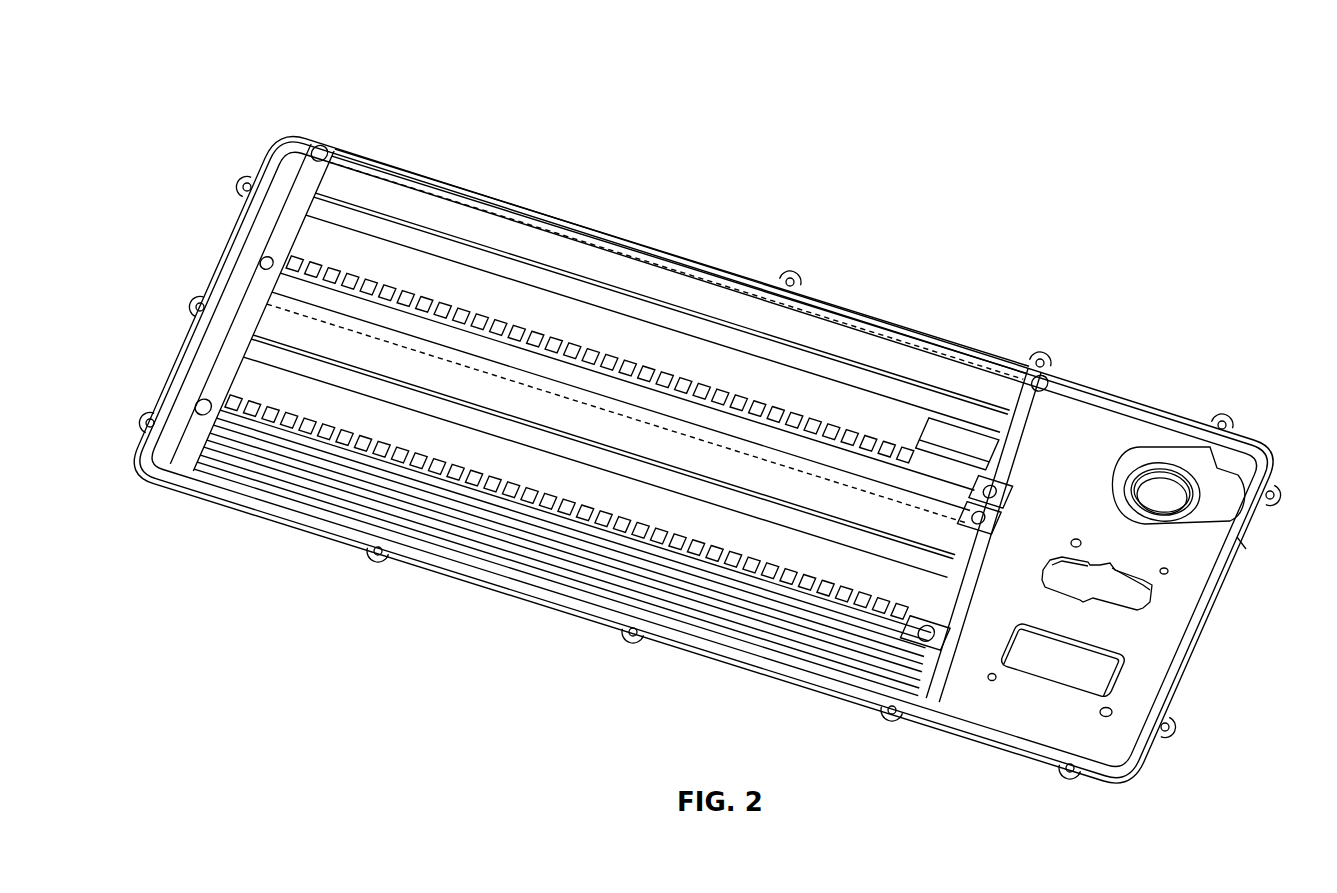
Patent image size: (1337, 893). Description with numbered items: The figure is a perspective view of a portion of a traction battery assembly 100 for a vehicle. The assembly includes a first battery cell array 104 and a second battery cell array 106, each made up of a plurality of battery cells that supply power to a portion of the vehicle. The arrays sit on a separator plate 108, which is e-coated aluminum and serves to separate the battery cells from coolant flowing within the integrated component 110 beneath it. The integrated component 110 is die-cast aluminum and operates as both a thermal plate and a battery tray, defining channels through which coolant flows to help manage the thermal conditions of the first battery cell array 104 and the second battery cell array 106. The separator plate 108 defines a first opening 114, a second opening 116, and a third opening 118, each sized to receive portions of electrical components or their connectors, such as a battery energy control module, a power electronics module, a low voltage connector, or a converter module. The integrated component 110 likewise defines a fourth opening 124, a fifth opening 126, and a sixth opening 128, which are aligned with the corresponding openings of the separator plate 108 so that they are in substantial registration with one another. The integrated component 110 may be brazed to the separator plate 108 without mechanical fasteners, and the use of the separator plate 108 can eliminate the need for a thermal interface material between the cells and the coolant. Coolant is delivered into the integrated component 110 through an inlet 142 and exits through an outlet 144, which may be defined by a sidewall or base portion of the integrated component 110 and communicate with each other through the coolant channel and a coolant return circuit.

The traction battery assembly 100 is at (343, 66).
The first battery cell array 104 is at (992, 378).
The second battery cell array 106 is at (846, 660).
The separator plate 108 is at (1078, 456).
The integrated component 110 is at (1184, 412).
The first opening 114 is at (1126, 468).
The second opening 116 is at (1232, 521).
The third opening 118 is at (1090, 607).
The fourth opening 124 is at (1122, 504).
The fifth opening 126 is at (1102, 565).
The sixth opening 128 is at (1038, 648).
The inlet 142 is at (1243, 548).
The outlet 144 is at (1168, 742).